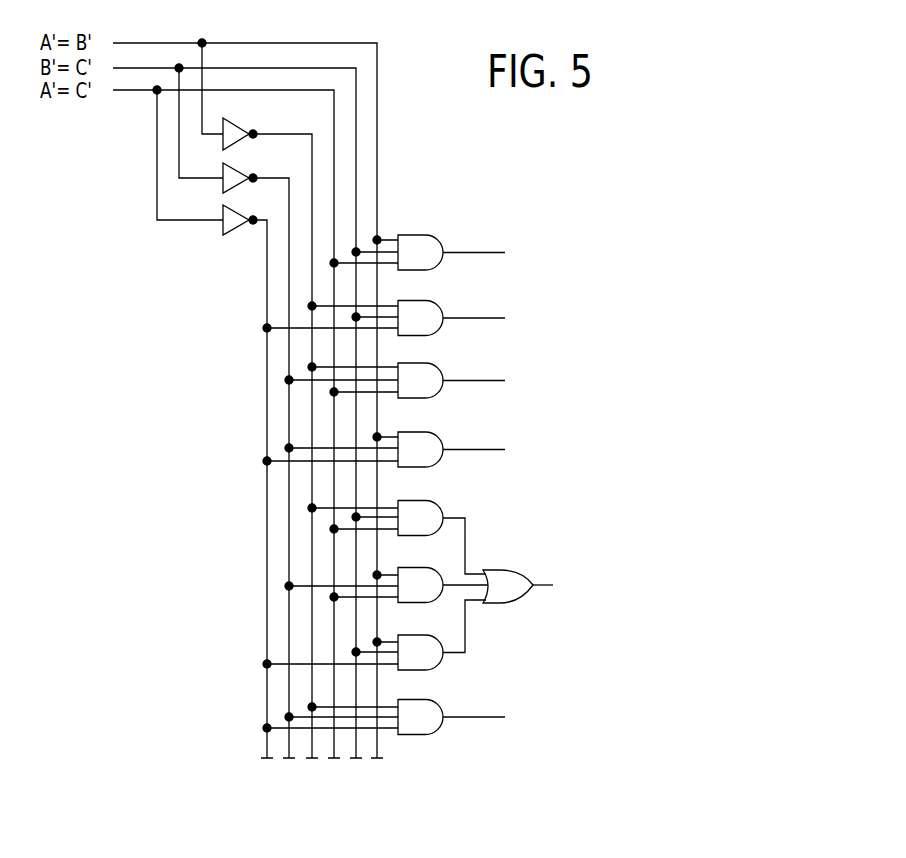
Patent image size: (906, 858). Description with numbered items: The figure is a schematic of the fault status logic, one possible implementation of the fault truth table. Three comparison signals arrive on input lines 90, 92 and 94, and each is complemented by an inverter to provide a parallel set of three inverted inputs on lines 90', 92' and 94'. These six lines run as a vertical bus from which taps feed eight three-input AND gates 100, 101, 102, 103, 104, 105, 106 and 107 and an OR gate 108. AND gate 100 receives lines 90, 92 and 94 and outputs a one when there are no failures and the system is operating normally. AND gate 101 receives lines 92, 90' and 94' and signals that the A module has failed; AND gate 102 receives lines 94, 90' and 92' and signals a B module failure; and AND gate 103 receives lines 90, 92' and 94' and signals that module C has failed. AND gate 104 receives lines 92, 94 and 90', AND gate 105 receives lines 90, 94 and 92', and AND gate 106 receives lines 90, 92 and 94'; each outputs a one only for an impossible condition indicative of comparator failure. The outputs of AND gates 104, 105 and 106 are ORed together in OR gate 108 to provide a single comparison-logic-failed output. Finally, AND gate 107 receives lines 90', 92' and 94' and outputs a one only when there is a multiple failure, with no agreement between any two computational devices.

The input line 90 is at (248, 383).
The input line 92 is at (237, 383).
The input line 94 is at (221, 422).
The inverted input line 90' is at (270, 430).
The inverted input line 92' is at (259, 453).
The inverted input line 94' is at (252, 474).
The AND gate 100 is at (440, 221).
The AND gate 101 is at (421, 300).
The AND gate 102 is at (423, 363).
The AND gate 103 is at (422, 432).
The AND gate 104 is at (432, 500).
The AND gate 105 is at (449, 558).
The AND gate 106 is at (446, 626).
The AND gate 107 is at (448, 690).
The OR gate 108 is at (534, 563).